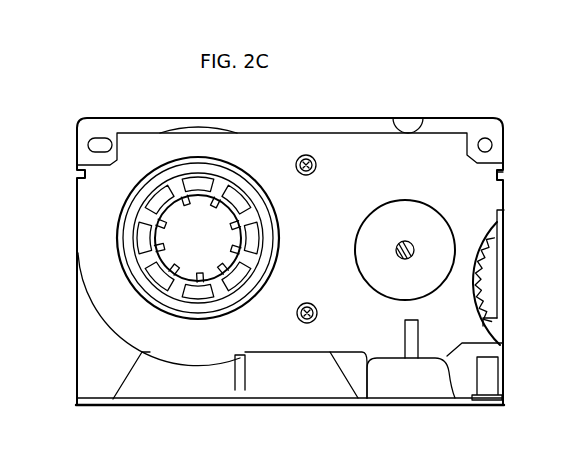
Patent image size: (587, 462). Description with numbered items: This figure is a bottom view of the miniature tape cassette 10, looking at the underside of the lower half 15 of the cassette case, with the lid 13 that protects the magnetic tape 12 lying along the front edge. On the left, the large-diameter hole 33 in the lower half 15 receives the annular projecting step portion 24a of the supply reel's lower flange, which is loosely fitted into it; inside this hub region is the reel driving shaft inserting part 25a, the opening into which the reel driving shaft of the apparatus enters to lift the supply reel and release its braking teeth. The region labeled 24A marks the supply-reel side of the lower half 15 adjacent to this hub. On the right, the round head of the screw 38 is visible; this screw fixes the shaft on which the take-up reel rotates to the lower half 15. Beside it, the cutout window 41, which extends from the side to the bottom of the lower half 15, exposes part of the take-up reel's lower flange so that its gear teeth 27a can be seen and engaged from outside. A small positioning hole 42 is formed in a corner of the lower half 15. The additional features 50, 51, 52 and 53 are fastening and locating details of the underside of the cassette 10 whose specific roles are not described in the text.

The tape cassette 10 is at (167, 102).
The magnetic tape 12 is at (187, 398).
The lid 13 is at (263, 404).
The lower half 15 is at (255, 123).
The hub opening cap 24A is at (192, 130).
The annular projecting step portion 24a is at (130, 246).
The reel driving shaft inserting part 25a is at (152, 224).
The gear teeth 27a is at (500, 270).
The hole 33 is at (262, 221).
The screw 38 is at (405, 242).
The cutout window 41 is at (482, 308).
The positioning hole 42 is at (484, 138).
The screw 50 is at (318, 313).
The screw 51 is at (317, 167).
The notch 52 is at (80, 176).
The notch 53 is at (503, 176).